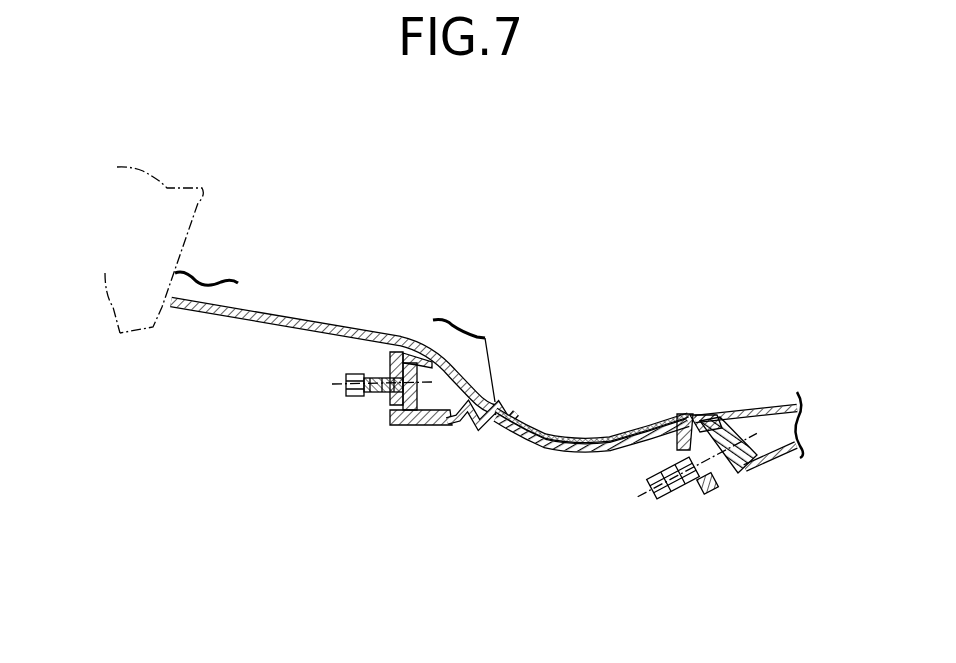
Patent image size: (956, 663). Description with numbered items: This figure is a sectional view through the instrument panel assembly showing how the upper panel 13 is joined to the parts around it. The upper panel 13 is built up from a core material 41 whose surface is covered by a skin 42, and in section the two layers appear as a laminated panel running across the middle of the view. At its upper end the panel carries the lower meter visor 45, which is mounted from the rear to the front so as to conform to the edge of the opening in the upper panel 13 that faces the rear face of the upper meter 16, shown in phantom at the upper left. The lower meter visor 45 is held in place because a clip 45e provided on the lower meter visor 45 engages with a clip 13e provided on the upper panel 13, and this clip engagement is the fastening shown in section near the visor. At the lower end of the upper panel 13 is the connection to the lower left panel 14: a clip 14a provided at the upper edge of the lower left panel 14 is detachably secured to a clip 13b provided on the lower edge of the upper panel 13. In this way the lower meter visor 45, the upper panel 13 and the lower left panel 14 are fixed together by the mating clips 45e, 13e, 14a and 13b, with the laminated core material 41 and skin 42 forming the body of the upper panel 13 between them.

The upper meter 16 is at (210, 200).
The lower meter visor 45 is at (303, 310).
The clips 13e is at (392, 360).
The clips 45e is at (358, 400).
The upper panel 13 is at (567, 439).
The skin 42 is at (572, 432).
The core material 41 is at (593, 452).
The lower left panel 14 is at (757, 396).
The clips 14a is at (670, 500).
The clips 13b is at (710, 494).